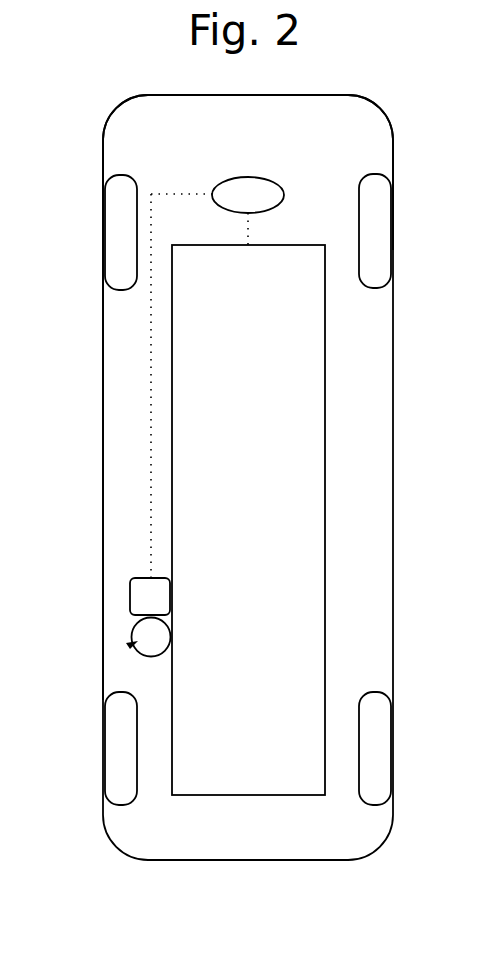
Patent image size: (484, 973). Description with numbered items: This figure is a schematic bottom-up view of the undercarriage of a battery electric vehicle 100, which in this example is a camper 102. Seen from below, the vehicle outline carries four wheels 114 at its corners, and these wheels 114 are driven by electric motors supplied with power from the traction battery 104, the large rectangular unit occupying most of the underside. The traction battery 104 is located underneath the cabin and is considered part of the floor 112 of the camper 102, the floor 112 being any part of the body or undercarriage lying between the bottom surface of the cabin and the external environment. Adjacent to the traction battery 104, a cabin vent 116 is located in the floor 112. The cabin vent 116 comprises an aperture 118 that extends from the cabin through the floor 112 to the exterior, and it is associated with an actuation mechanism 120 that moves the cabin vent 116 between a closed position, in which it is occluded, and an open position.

The battery electric vehicle 100 is at (103, 487).
The camper 102 is at (103, 165).
The traction battery 104 is at (172, 548).
The floor 112 is at (112, 360).
The wheels 114 is at (105, 762).
The cabin vent 116 is at (135, 626).
The aperture 118 is at (130, 645).
The actuation mechanism 120 is at (130, 595).